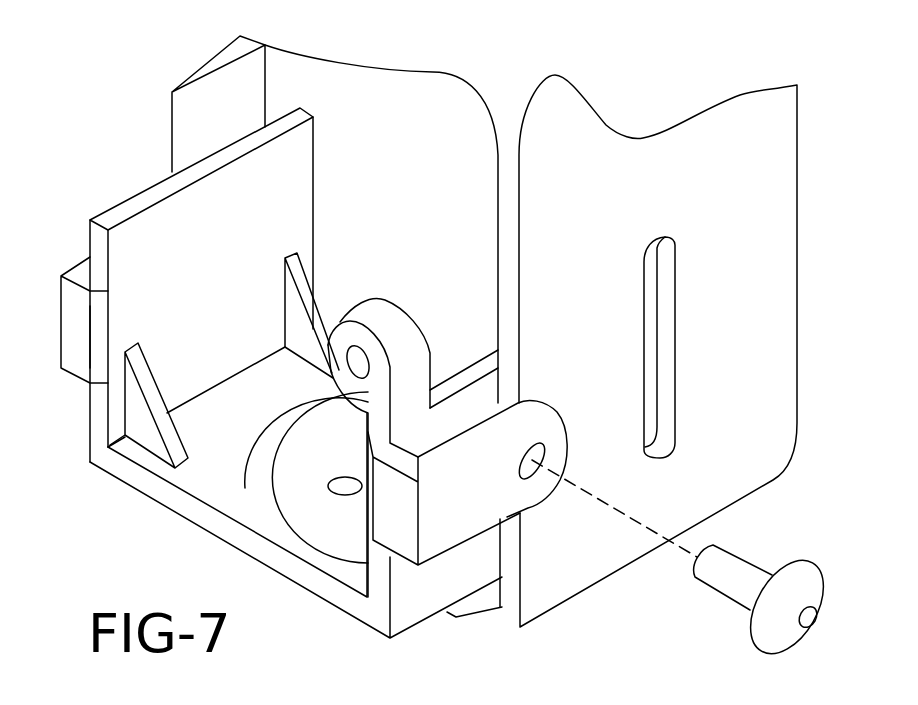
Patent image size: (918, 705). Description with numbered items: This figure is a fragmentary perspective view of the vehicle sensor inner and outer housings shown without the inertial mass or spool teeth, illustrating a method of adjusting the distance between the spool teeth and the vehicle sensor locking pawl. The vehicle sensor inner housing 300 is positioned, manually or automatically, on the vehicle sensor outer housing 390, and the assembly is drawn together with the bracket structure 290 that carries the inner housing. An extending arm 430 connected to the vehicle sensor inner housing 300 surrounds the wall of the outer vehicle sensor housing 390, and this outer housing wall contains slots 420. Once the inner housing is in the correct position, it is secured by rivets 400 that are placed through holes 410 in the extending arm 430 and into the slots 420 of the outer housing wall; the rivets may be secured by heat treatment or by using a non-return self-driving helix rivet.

The mounting bracket 290 is at (207, 513).
The vehicle sensor inner housing 300 is at (130, 252).
The vehicle sensor outer housing 390 is at (763, 228).
The rivets 400 is at (802, 580).
The holes 410 is at (528, 468).
The slots 420 is at (650, 388).
The extending arm 430 is at (437, 527).